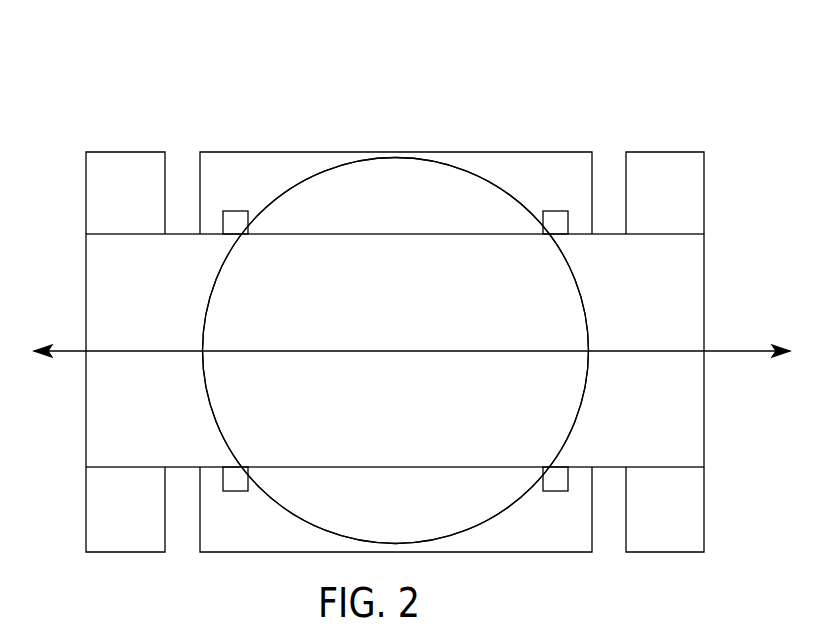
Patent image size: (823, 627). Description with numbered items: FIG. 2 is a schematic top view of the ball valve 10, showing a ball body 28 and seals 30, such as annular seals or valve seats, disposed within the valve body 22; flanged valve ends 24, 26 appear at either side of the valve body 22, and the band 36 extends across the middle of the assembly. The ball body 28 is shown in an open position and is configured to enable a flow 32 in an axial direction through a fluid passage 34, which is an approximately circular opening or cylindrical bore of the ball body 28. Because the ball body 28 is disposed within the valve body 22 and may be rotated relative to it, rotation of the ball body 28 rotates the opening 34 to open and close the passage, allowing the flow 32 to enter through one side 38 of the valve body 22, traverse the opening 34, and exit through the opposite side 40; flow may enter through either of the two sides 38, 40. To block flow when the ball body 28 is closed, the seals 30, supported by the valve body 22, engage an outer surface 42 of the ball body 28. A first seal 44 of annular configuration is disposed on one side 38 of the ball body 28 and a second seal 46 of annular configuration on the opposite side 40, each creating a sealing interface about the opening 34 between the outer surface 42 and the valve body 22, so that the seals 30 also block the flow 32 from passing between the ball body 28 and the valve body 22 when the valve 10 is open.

The ball valve 10 is at (537, 60).
The valve body 22 is at (297, 152).
The first side member 24 is at (124, 152).
The second side member 26 is at (665, 152).
The ball body 28 is at (400, 182).
The seals 30 is at (233, 225).
The flow 32 is at (627, 350).
The fluid passage 34 is at (416, 314).
The band 36 is at (318, 238).
The side 38 is at (188, 284).
The opposite side 40 is at (601, 287).
The outer surface 42 is at (480, 175).
The first seal 44 is at (237, 245).
The second seal 46 is at (553, 245).